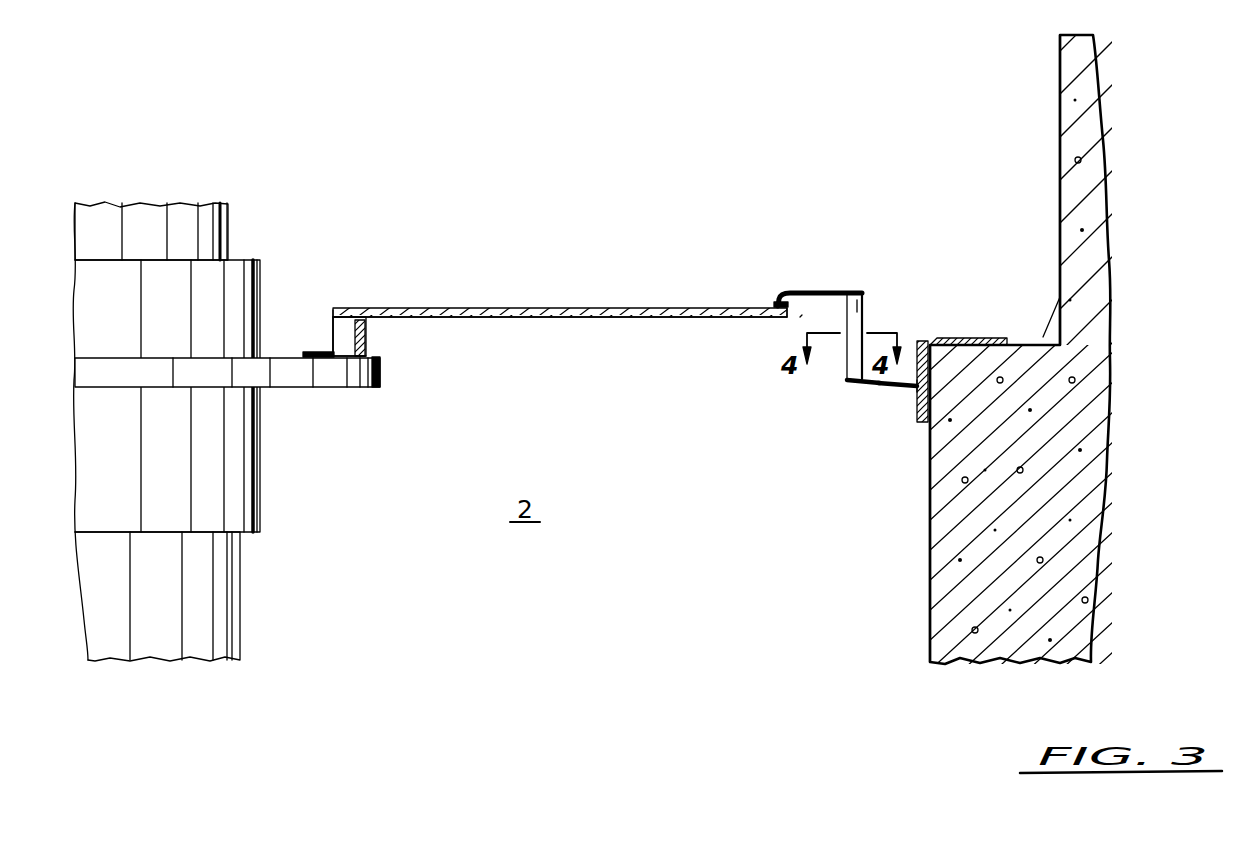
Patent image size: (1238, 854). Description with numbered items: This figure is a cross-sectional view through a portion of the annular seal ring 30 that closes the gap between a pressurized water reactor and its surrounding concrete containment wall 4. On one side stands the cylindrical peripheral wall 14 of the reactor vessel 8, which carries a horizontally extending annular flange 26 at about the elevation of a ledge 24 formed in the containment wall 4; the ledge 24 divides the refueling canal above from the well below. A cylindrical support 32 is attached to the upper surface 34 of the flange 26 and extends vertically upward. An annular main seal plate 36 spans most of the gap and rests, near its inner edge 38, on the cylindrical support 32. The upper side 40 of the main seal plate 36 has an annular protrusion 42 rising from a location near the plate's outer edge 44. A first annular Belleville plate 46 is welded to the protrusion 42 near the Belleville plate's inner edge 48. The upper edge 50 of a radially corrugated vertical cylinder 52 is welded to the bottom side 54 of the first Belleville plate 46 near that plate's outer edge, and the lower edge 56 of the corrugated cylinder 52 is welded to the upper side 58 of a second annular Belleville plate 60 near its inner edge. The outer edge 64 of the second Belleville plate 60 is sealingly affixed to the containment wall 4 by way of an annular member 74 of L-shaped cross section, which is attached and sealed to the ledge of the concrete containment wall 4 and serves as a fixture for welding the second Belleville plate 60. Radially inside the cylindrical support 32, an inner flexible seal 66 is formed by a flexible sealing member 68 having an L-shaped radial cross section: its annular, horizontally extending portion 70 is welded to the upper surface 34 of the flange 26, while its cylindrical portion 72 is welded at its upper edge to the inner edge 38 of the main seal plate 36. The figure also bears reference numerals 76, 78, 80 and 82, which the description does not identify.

The containment wall 4 is at (950, 553).
The reactor vessel 8 is at (155, 193).
The cylindrical peripheral wall 14 is at (223, 605).
The ledge 24 is at (1100, 275).
The horizontally extending annular flange 26 is at (288, 378).
The annular seal ring 30 is at (561, 276).
The cylindrical support 32 is at (367, 327).
The upper surface 34 is at (375, 348).
The annular main seal plate 36 is at (505, 317).
The inner edge 38 is at (334, 308).
The upper side 40 is at (640, 307).
The annular protrusion 42 is at (772, 300).
The main seal plate outer edge 44 is at (790, 318).
The first annular Belleville plate 46 is at (834, 347).
The inner edge 48 is at (777, 292).
The upper edge 50 is at (862, 294).
The radially corrugated vertical cylinder 52 is at (864, 318).
The bottom side 54 is at (800, 317).
The lower edge 56 is at (845, 380).
The upper side 58 is at (905, 387).
The second annular Belleville plate 60 is at (878, 385).
The outer edge 64 is at (905, 392).
The inner flexible seal 66 is at (313, 308).
The flexible sealing member 68 is at (322, 345).
The annular horizontally extending portion 70 is at (314, 352).
The cylindrical portion 72 is at (332, 310).
The annular member 74 is at (962, 340).
The vertical wall 76 is at (1060, 140).
The deck face 78 is at (950, 620).
The wall corner 80 is at (1043, 337).
The face flashing 82 is at (918, 422).